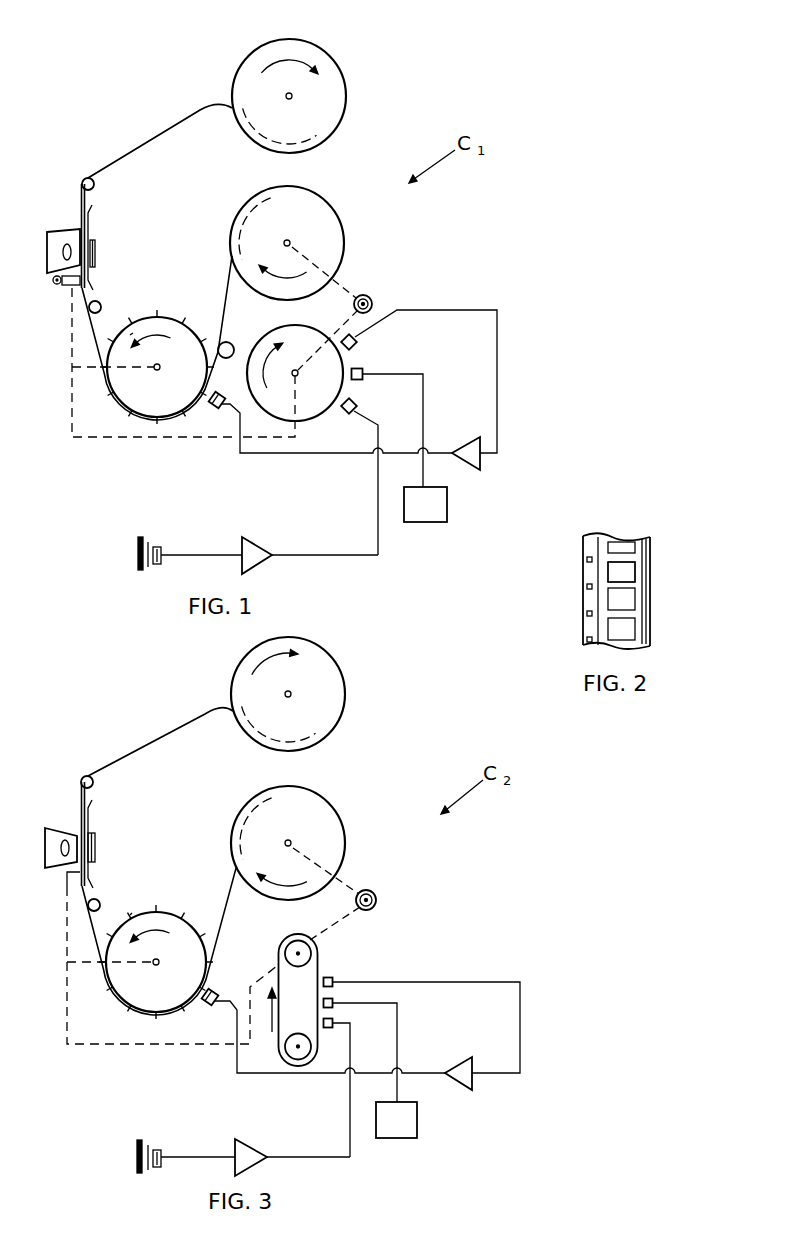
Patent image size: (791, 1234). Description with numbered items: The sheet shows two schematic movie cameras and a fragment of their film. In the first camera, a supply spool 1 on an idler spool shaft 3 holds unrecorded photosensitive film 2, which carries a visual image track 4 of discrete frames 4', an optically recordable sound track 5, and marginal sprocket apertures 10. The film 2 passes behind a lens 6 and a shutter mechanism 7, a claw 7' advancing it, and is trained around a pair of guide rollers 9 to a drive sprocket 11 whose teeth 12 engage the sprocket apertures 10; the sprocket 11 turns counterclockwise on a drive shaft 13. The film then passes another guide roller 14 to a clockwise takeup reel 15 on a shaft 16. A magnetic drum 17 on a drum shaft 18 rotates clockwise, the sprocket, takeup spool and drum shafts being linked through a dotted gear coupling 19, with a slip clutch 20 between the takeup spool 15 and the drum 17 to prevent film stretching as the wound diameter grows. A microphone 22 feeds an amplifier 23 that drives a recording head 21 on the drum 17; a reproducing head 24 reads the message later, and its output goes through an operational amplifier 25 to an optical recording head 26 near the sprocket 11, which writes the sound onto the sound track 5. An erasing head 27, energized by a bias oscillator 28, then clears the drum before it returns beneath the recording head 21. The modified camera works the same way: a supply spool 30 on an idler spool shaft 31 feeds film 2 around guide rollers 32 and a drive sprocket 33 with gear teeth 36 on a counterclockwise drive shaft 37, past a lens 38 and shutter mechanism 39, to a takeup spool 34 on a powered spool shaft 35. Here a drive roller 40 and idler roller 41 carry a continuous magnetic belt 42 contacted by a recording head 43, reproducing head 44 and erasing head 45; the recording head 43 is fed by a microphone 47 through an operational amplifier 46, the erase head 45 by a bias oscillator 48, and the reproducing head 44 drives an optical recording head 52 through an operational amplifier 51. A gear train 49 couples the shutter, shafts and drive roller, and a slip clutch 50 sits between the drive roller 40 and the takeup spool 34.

In FIG. 1, the supply spool 1 is at (318, 117).
In FIG. 1, the photosensitive film 2 is at (140, 143).
In FIG. 2, the photosensitive film 2 is at (651, 606).
In FIG. 3, the photosensitive film 2 is at (157, 738).
In FIG. 1, the idler spool shaft 3 is at (292, 94).
In FIG. 2, the visual image track 4 is at (610, 565).
In FIG. 2, the frames 4' is at (594, 575).
In FIG. 2, the sound track 5 is at (644, 540).
In FIG. 1, the lens 6 is at (62, 238).
In FIG. 1, the shutter mechanism 7 is at (106, 247).
In FIG. 1, the claw 7' is at (60, 296).
In FIG. 1, the guide rollers 9 is at (94, 187).
In FIG. 2, the sprocket apertures 10 is at (585, 613).
In FIG. 1, the drive sprocket 11 is at (130, 335).
In FIG. 1, the teeth 12 is at (157, 312).
In FIG. 1, the drive shaft 13 is at (155, 369).
In FIG. 1, the guide roller 14 is at (232, 343).
In FIG. 1, the takeup reel 15 is at (325, 228).
In FIG. 1, the shaft 16 is at (289, 241).
In FIG. 1, the magnetic drum 17 is at (283, 400).
In FIG. 1, the drum shaft 18 is at (297, 371).
In FIG. 1, the gear coupling 19 is at (168, 438).
In FIG. 1, the slip clutch 20 is at (370, 298).
In FIG. 1, the recording head 21 is at (345, 413).
In FIG. 1, the microphone 22 is at (140, 538).
In FIG. 1, the amplifier 23 is at (253, 547).
In FIG. 1, the reproducing head 24 is at (357, 343).
In FIG. 1, the operational amplifier 25 is at (473, 467).
In FIG. 1, the optical recording head 26 is at (324, 422).
In FIG. 1, the erasing head 27 is at (365, 378).
In FIG. 1, the bias oscillator 28 is at (427, 513).
In FIG. 3, the supply spool 30 is at (325, 706).
In FIG. 3, the idler spool shaft 31 is at (291, 692).
In FIG. 3, the guide rollers 32 is at (93, 782).
In FIG. 3, the drive sprocket 33 is at (190, 925).
In FIG. 3, the takeup spool 34 is at (325, 838).
In FIG. 3, the powered spool shaft 35 is at (290, 841).
In FIG. 3, the gear teeth 36 is at (130, 915).
In FIG. 3, the drive shaft 37 is at (154, 964).
In FIG. 3, the lens 38 is at (50, 833).
In FIG. 3, the shutter mechanism 39 is at (97, 840).
In FIG. 3, the drive roller 40 is at (302, 942).
In FIG. 3, the idler roller 41 is at (293, 1062).
In FIG. 3, the continuous magnetic belt 42 is at (305, 973).
In FIG. 3, the recording head 43 is at (328, 1028).
In FIG. 3, the reproducing head 44 is at (333, 983).
In FIG. 3, the erasing head 45 is at (333, 1003).
In FIG. 3, the operational amplifier 46 is at (247, 1157).
In FIG. 3, the microphone 47 is at (143, 1143).
In FIG. 3, the bias oscillator 48 is at (400, 1115).
In FIG. 3, the gear train 49 is at (95, 1045).
In FIG. 3, the slip clutch 50 is at (377, 897).
In FIG. 3, the operational amplifier 51 is at (470, 1085).
In FIG. 3, the optical recording head 52 is at (320, 1031).